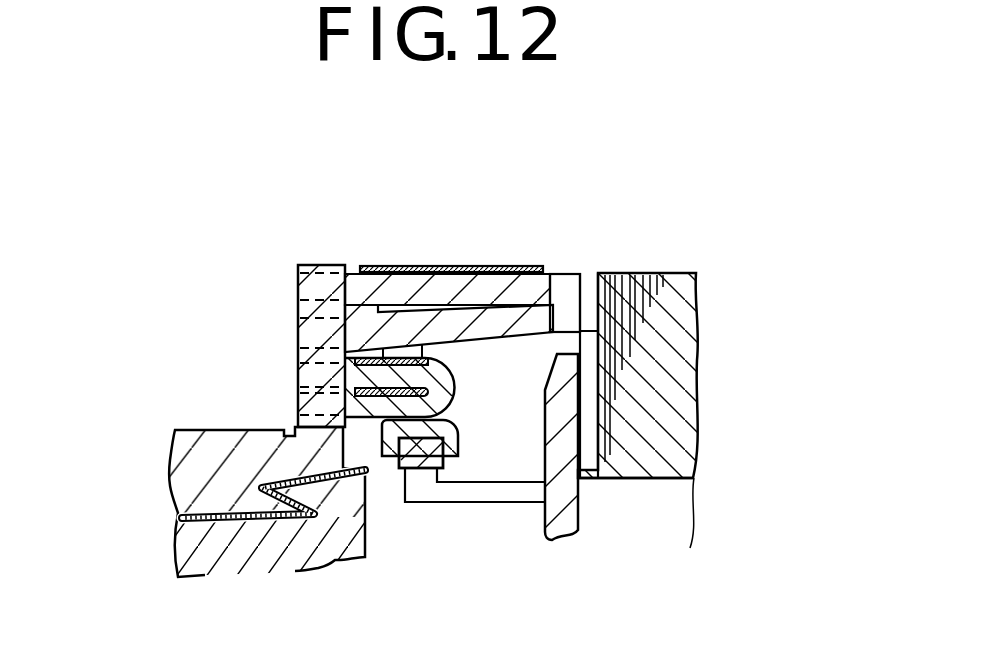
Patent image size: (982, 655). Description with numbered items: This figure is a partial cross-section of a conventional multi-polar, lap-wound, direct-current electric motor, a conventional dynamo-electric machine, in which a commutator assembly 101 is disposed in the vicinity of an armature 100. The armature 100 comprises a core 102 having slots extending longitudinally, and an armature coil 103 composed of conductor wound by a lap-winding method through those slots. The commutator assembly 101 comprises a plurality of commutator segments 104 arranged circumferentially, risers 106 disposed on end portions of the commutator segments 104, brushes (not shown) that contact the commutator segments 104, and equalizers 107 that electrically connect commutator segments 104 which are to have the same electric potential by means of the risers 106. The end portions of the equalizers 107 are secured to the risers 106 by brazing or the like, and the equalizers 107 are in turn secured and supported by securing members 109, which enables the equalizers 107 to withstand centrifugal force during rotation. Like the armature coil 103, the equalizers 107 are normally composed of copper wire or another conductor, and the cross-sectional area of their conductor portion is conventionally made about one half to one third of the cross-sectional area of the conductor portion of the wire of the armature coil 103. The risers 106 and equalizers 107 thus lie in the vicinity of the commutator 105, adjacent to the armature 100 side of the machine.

The armature 100 is at (705, 297).
The commutator assembly 101 is at (232, 350).
The core 102 is at (641, 480).
The armature coil 103 is at (482, 297).
The commutator segments 104 is at (199, 429).
The commutator 105 is at (178, 473).
The risers 106 is at (297, 305).
The equalizers 107 is at (372, 423).
The securing members 109 is at (482, 492).